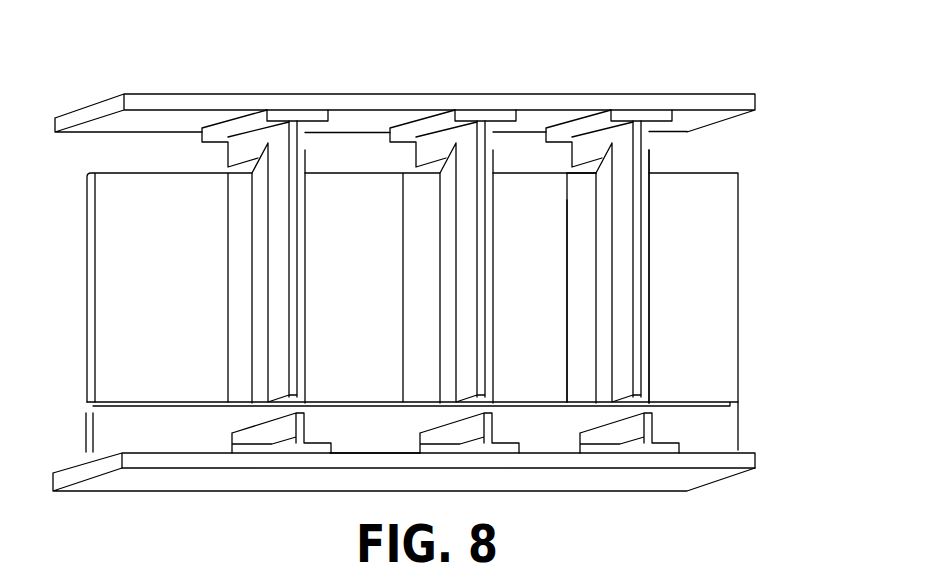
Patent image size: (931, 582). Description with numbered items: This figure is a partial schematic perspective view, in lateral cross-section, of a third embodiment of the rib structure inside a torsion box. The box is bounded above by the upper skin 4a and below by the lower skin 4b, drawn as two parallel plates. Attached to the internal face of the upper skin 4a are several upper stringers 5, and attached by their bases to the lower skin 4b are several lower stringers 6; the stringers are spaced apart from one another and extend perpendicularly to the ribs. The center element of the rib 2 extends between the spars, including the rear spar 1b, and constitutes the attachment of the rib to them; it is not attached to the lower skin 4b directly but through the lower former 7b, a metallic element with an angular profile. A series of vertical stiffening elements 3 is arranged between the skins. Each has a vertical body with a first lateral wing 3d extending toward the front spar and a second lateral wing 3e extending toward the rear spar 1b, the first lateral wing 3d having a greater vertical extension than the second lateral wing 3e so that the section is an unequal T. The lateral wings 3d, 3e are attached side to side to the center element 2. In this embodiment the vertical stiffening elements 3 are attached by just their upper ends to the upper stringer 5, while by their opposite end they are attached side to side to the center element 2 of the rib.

The rear spar 1b is at (520, 468).
The center element of the rib 2 is at (682, 320).
The vertical stiffening elements 3 is at (625, 215).
The first lateral wing 3d is at (578, 368).
The second lateral wing 3e is at (655, 243).
The upper skin 4a is at (180, 102).
The lower skin 4b is at (650, 480).
The upper stringers 5 is at (655, 115).
The lower stringers 6 is at (280, 450).
The lower former 7b is at (395, 428).